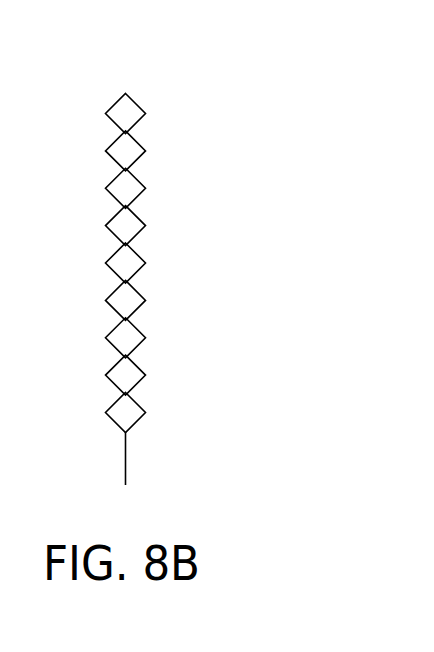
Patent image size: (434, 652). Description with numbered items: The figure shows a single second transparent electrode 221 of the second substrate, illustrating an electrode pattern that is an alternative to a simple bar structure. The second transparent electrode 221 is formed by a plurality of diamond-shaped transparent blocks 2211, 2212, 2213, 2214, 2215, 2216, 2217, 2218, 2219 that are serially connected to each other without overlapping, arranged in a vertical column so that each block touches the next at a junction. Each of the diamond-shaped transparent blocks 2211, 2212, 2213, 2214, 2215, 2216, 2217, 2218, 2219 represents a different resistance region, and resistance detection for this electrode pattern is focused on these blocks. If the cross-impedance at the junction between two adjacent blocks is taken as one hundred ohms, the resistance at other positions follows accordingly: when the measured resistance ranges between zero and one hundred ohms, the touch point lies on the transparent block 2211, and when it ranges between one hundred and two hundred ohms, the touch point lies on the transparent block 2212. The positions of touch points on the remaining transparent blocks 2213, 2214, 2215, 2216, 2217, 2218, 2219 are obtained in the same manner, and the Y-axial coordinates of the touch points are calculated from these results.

The second transparent electrode 221 is at (165, 73).
The diamond-shaped transparent block 2211 is at (146, 412).
The diamond-shaped transparent block 2212 is at (146, 375).
The diamond-shaped transparent block 2213 is at (146, 338).
The diamond-shaped transparent block 2214 is at (146, 300).
The diamond-shaped transparent block 2215 is at (146, 263).
The diamond-shaped transparent block 2216 is at (146, 226).
The diamond-shaped transparent block 2217 is at (146, 188).
The diamond-shaped transparent block 2218 is at (146, 151).
The diamond-shaped transparent block 2219 is at (146, 114).